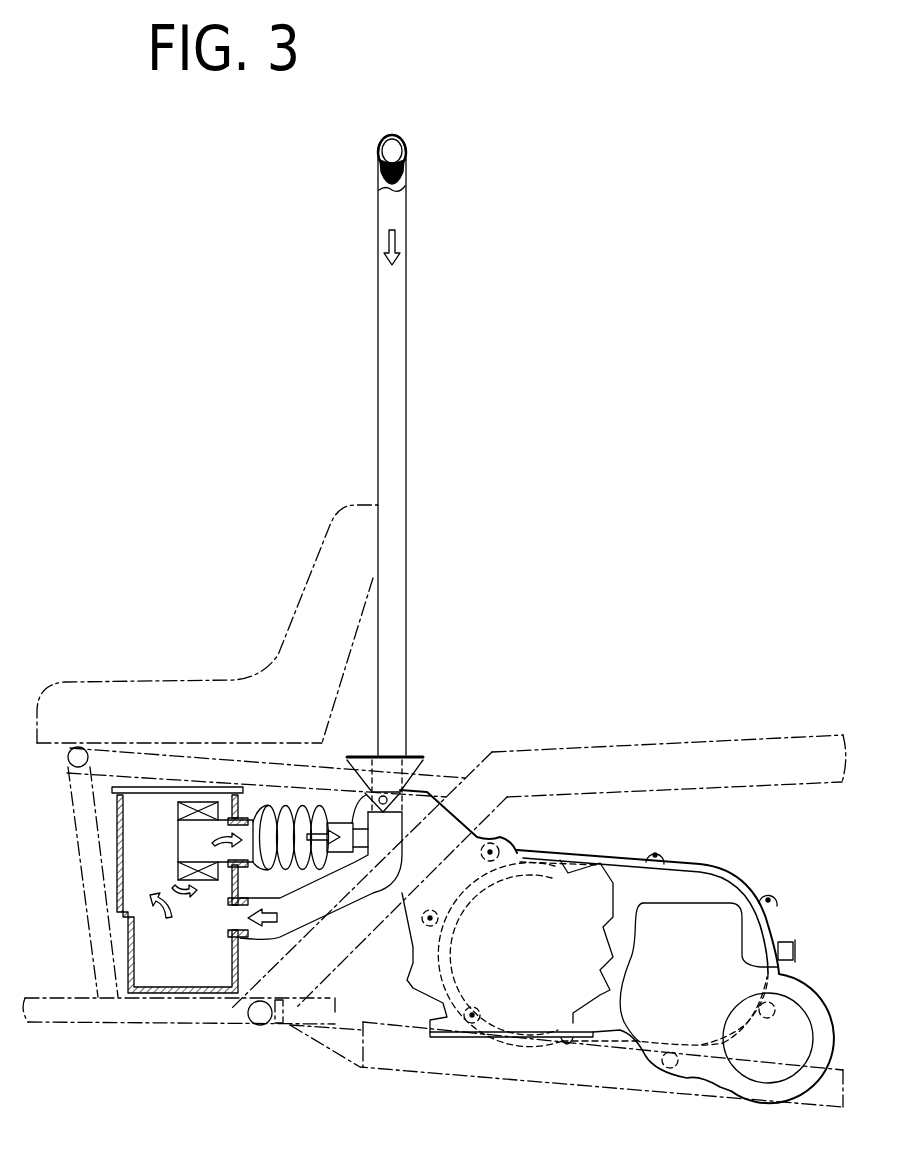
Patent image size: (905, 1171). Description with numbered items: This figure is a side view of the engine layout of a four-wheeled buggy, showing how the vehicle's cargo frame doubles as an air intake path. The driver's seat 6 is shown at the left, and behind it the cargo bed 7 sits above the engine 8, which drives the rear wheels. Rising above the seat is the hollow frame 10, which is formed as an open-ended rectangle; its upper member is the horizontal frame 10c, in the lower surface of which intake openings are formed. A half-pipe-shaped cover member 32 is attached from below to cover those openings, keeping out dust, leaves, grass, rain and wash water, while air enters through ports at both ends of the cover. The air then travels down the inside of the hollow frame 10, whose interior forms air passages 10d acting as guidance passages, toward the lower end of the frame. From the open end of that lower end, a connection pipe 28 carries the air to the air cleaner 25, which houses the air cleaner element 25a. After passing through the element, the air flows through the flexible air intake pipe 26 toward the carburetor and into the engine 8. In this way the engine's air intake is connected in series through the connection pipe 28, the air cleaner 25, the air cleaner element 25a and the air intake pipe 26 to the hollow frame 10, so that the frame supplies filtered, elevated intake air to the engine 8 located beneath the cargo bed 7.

The driver's seat 6 is at (145, 692).
The cargo bed 7 is at (633, 763).
The engine 8 is at (633, 845).
The hollow frame 10 is at (393, 473).
The horizontal frame 10c is at (400, 140).
The air passages 10d is at (393, 408).
The cover member 32 is at (378, 173).
The air cleaner 25 is at (127, 932).
The air cleaner element 25a is at (180, 812).
The air intake pipe 26 is at (292, 805).
The connection pipe 28 is at (323, 893).